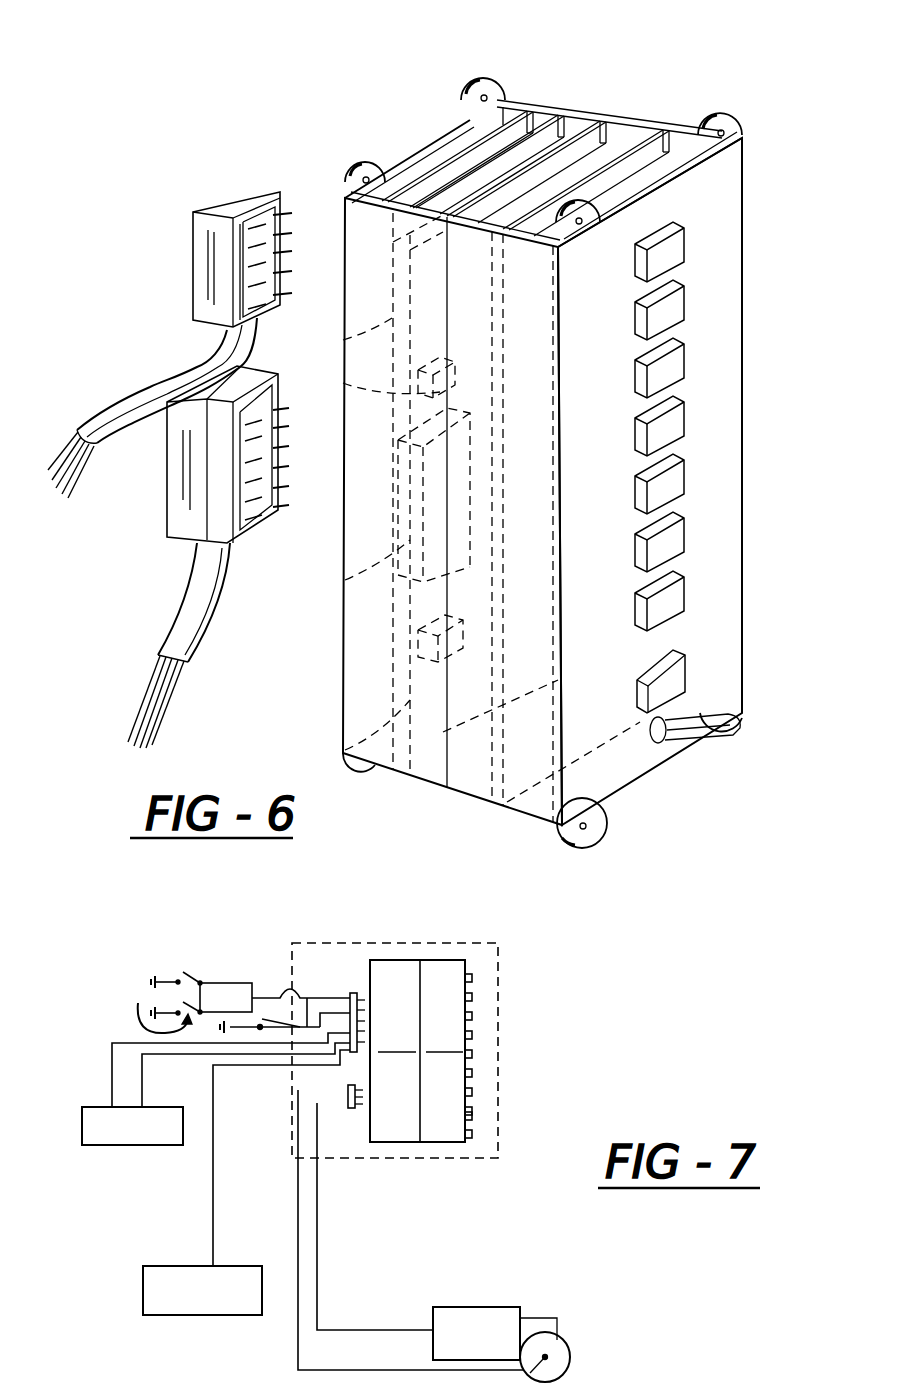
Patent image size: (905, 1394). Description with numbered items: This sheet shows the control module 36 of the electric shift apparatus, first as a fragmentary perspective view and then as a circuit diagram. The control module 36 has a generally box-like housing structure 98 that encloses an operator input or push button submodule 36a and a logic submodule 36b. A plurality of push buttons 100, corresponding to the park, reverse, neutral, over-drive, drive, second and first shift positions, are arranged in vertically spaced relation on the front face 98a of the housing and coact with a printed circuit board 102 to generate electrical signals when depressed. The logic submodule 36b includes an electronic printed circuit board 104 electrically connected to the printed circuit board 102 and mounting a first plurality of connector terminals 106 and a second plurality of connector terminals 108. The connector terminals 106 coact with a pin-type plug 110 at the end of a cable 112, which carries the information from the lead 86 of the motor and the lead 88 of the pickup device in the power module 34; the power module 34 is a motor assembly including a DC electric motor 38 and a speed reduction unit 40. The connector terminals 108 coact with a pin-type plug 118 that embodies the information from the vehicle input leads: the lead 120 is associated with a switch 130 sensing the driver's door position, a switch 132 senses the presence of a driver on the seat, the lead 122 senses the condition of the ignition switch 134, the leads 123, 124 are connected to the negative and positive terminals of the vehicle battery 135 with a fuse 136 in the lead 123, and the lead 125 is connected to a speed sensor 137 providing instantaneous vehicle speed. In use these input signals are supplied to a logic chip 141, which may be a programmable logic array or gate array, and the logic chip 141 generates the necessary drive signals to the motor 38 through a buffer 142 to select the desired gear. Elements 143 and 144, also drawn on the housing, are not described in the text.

In FIG. 6, the control module 36 is at (775, 160).
In FIG. 7, the control module 36 is at (402, 930).
In FIG. 6, the operator input submodule 36a is at (676, 148).
In FIG. 7, the operator input submodule 36a is at (441, 1051).
In FIG. 6, the logic submodule 36b is at (572, 118).
In FIG. 7, the logic submodule 36b is at (393, 1051).
In FIG. 6, the housing structure 98 is at (362, 706).
In FIG. 6, the front face 98a is at (742, 438).
In FIG. 6, the push buttons 100 is at (675, 250).
In FIG. 7, the push buttons 100 is at (472, 981).
In FIG. 6, the printed circuit board 102 is at (632, 140).
In FIG. 6, the electronic printed circuit board 104 is at (535, 100).
In FIG. 6, the first plurality of connector terminals 106 is at (412, 545).
In FIG. 6, the second plurality of connector terminals 108 is at (392, 325).
In FIG. 6, the pin-type plug 110 is at (183, 482).
In FIG. 7, the pin-type plug 110 is at (354, 1110).
In FIG. 6, the cable 112 is at (190, 606).
In FIG. 6, the pin-type plug 118 is at (232, 200).
In FIG. 7, the pin-type plug 118 is at (354, 993).
In FIG. 6, the logic chip 141 is at (415, 380).
In FIG. 6, the buffer 142 is at (415, 655).
In FIG. 6, the mode button 143 is at (675, 678).
In FIG. 7, the mode button 143 is at (472, 1116).
In FIG. 6, the lever 144 is at (700, 738).
In FIG. 7, the lever 144 is at (472, 1135).
In FIG. 7, the lead 120 is at (220, 983).
In FIG. 7, the lead 122 is at (302, 983).
In FIG. 7, the lead 123 is at (112, 1083).
In FIG. 7, the lead 124 is at (142, 1087).
In FIG. 7, the lead 125 is at (213, 1230).
In FIG. 7, the switch 130 is at (172, 965).
In FIG. 7, the switch 132 is at (144, 997).
In FIG. 7, the ignition switch 134 is at (270, 1050).
In FIG. 7, the vehicle battery 135 is at (168, 1146).
In FIG. 7, the fuse 136 is at (140, 1045).
In FIG. 7, the speed sensor 137 is at (143, 1293).
In FIG. 7, the lead 86 is at (318, 1300).
In FIG. 7, the lead 88 is at (298, 1352).
In FIG. 7, the DC electric motor 38 is at (447, 1307).
In FIG. 7, the power module 34 is at (520, 1295).
In FIG. 7, the speed reduction unit 40 is at (572, 1352).